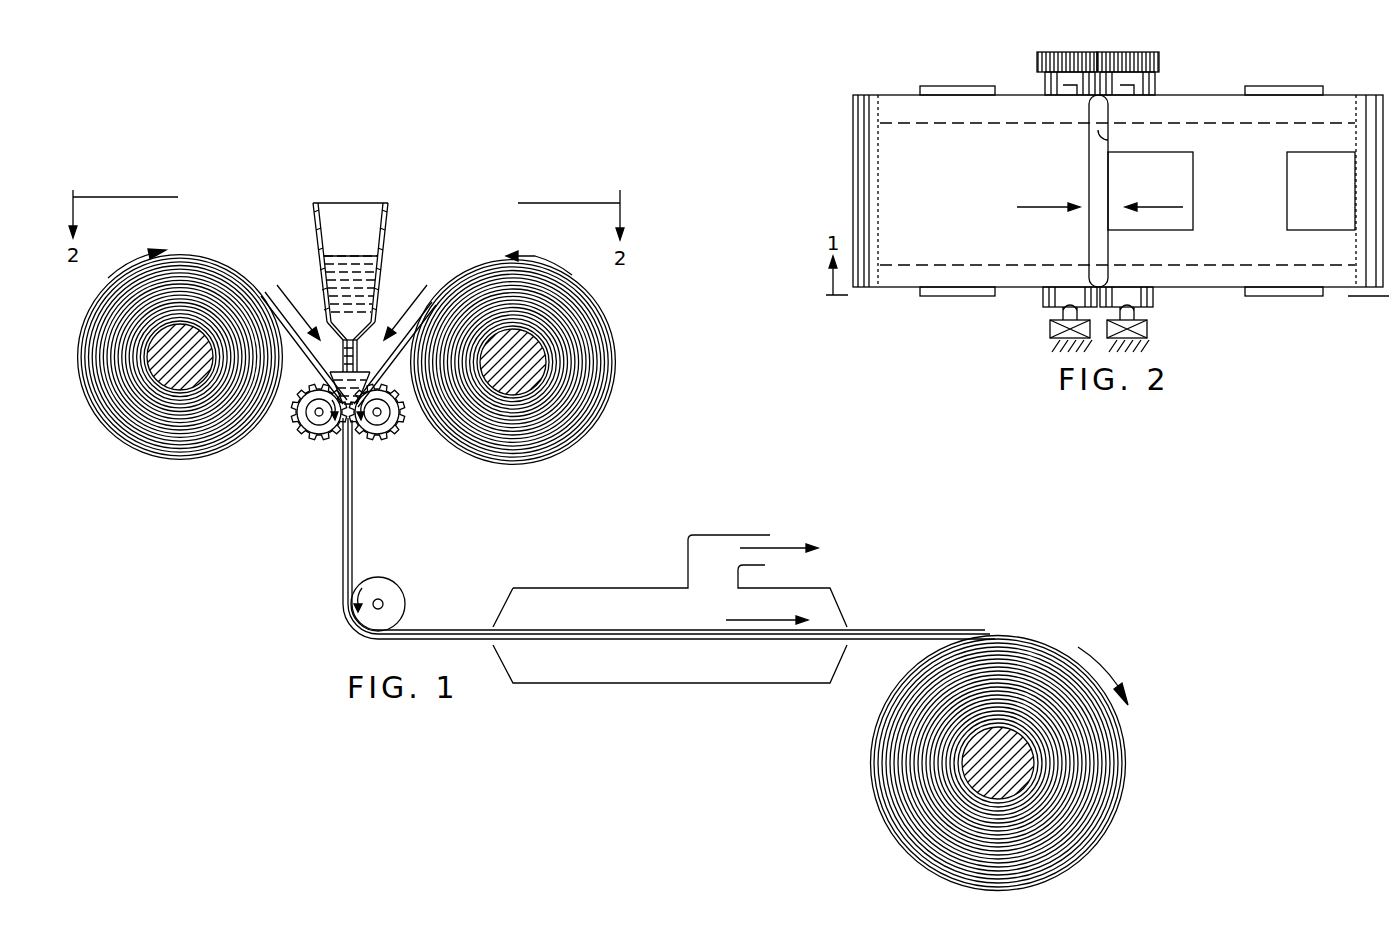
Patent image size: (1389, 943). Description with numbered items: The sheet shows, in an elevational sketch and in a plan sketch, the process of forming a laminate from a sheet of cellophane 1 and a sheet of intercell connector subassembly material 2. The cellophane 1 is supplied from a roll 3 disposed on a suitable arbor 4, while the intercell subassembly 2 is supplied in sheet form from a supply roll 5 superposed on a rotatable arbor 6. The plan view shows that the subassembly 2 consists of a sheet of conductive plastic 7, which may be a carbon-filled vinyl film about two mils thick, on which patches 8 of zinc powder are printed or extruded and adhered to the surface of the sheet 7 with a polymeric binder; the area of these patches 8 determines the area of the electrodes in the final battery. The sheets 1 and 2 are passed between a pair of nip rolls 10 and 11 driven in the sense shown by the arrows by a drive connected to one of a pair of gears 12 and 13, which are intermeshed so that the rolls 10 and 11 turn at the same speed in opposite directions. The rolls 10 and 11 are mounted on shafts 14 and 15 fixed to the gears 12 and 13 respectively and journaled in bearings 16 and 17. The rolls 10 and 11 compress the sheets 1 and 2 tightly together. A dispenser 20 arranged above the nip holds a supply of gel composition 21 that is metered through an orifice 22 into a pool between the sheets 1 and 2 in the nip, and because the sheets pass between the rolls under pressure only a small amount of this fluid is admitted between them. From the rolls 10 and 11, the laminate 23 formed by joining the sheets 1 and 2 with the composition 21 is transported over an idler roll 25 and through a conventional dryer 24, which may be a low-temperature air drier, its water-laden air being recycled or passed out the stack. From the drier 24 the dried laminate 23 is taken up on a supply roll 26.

In FIG. 2, the sheet of cellophane 1 is at (1003, 108).
In FIG. 1, the sheet of intercell connector subassembly material 2 is at (398, 350).
In FIG. 2, the sheet of intercell connector subassembly material 2 is at (1208, 107).
In FIG. 1, the roll 3 is at (166, 458).
In FIG. 1, the arbor 4 is at (172, 362).
In FIG. 1, the supply roll 5 is at (592, 416).
In FIG. 1, the rotatable arbor 6 is at (505, 365).
In FIG. 2, the sheet of conductive plastic 7 is at (1205, 280).
In FIG. 2, the patches 8 is at (1177, 189).
In FIG. 1, the nip roll 10 is at (300, 430).
In FIG. 2, the nip roll 10 is at (1045, 82).
In FIG. 1, the nip roll 11 is at (383, 436).
In FIG. 2, the nip roll 11 is at (1152, 84).
In FIG. 1, the gear 12 is at (304, 440).
In FIG. 2, the gear 12 is at (1050, 52).
In FIG. 1, the gear 13 is at (400, 424).
In FIG. 2, the gear 13 is at (1122, 52).
In FIG. 1, the shaft 14 is at (320, 418).
In FIG. 2, the shaft 14 is at (1050, 308).
In FIG. 1, the shaft 15 is at (376, 418).
In FIG. 2, the shaft 15 is at (1132, 314).
In FIG. 2, the bearing 16 is at (1052, 330).
In FIG. 2, the bearing 17 is at (1146, 330).
In FIG. 1, the dispenser 20 is at (386, 222).
In FIG. 1, the gel composition 21 is at (368, 250).
In FIG. 2, the gel composition 21 is at (1102, 135).
In FIG. 1, the orifice 22 is at (345, 345).
In FIG. 1, the laminate 23 is at (330, 600).
In FIG. 1, the dryer 24 is at (722, 696).
In FIG. 1, the idler roll 25 is at (404, 592).
In FIG. 1, the supply roll 26 is at (885, 840).